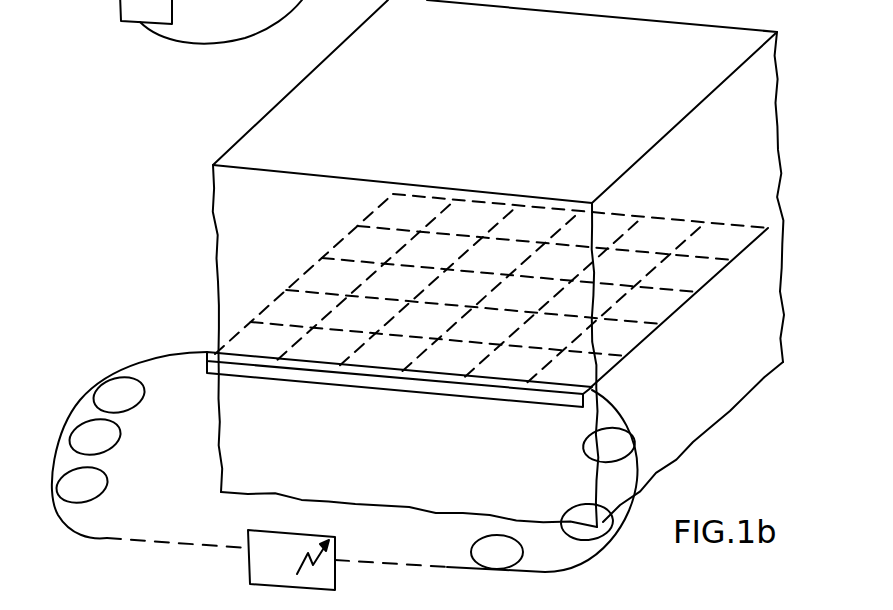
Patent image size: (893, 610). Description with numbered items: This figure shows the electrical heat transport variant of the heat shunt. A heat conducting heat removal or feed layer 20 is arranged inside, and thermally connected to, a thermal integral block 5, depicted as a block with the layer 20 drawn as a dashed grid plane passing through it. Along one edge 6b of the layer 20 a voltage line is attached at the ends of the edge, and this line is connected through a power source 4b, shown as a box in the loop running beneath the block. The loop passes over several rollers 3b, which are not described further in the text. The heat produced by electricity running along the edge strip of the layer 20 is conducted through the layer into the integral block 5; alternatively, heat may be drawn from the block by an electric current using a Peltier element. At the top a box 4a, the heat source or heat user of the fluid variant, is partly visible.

The thermal integral block 5 is at (748, 153).
The heat removal or feed layer 20 is at (492, 250).
The edge 6b is at (405, 452).
The rollers 3b is at (72, 416).
The heat source or heat user 4a is at (163, 13).
The power source 4b is at (286, 575).